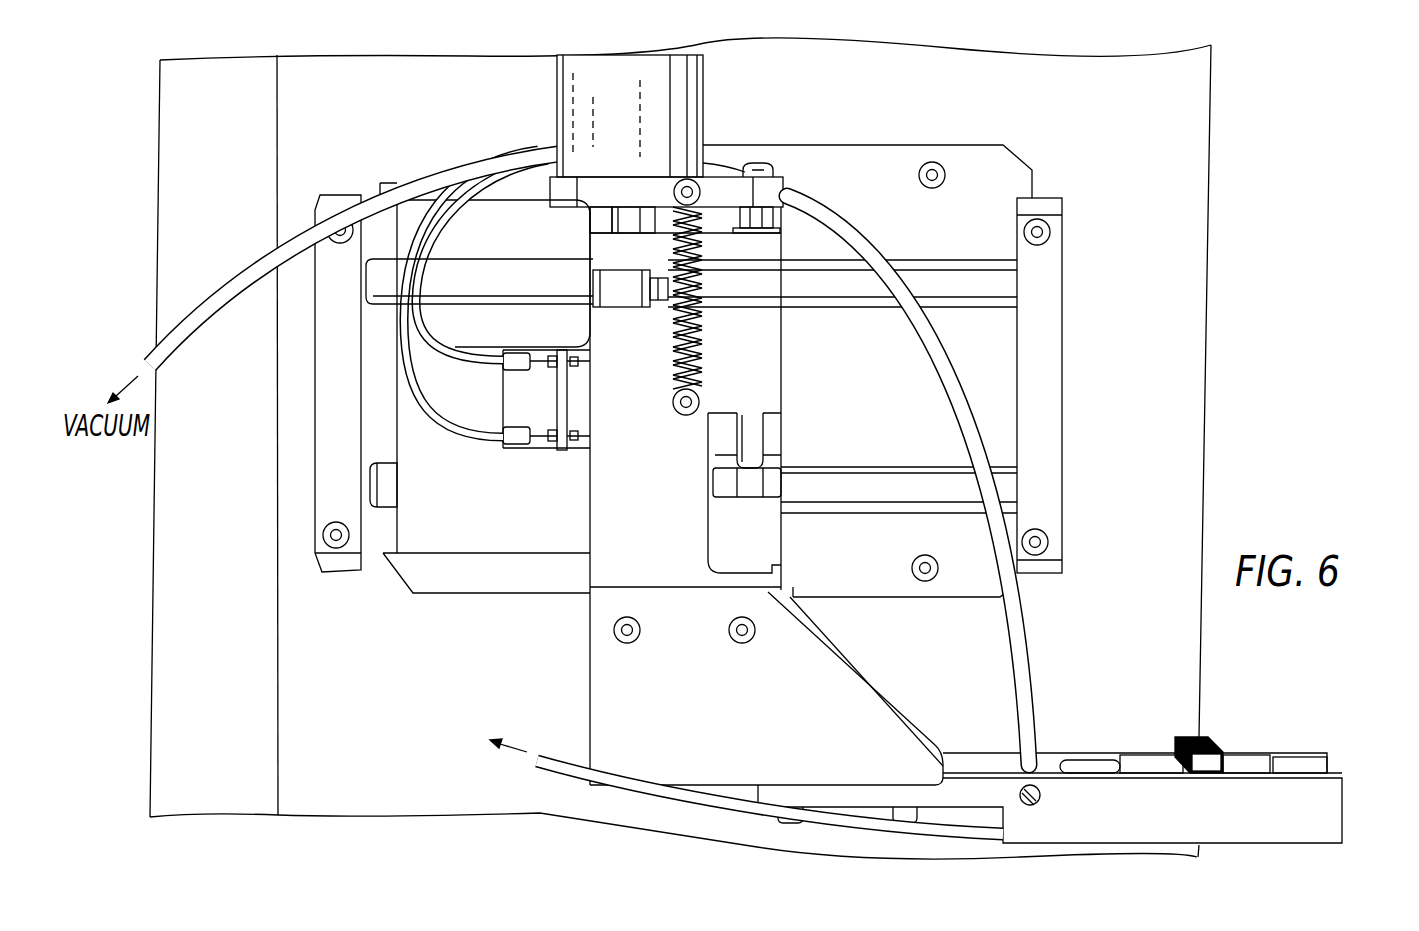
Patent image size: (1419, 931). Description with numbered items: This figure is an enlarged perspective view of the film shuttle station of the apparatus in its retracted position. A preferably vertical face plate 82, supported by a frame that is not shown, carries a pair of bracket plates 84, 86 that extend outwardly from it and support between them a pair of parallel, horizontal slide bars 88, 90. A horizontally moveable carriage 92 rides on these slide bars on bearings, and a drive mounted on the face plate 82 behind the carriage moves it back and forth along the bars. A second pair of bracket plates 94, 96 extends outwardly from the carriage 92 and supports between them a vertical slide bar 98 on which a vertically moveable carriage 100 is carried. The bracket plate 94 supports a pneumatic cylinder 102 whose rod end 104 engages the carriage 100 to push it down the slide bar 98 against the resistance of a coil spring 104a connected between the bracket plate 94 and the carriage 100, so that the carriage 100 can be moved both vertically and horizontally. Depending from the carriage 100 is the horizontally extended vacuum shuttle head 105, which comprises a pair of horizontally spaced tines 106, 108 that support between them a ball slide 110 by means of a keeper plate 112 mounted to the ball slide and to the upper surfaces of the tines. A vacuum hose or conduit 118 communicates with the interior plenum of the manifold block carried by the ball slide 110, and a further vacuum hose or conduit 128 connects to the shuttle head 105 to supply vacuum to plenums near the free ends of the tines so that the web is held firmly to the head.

The face plate 82 is at (1193, 183).
The bracket plate 84 is at (328, 390).
The bracket plate 86 is at (1050, 274).
The slide bar 88 is at (940, 281).
The slide bar 90 is at (874, 502).
The carriage 92 is at (490, 526).
The bracket plate 94 is at (778, 189).
The bracket plate 96 is at (776, 483).
The vertical slide bar 98 is at (756, 438).
The carriage 100 is at (657, 546).
The pneumatic cylinder 102 is at (680, 116).
The rod end 104 is at (623, 278).
The coil spring 104a is at (700, 314).
The vacuum shuttle head 105 is at (860, 695).
The tine 106 is at (1333, 800).
The tine 108 is at (1322, 754).
The ball slide 110 is at (1263, 754).
The keeper plate 112 is at (1220, 744).
The vacuum hose or conduit 118 is at (561, 761).
The vacuum hose or conduit 128 is at (1022, 661).